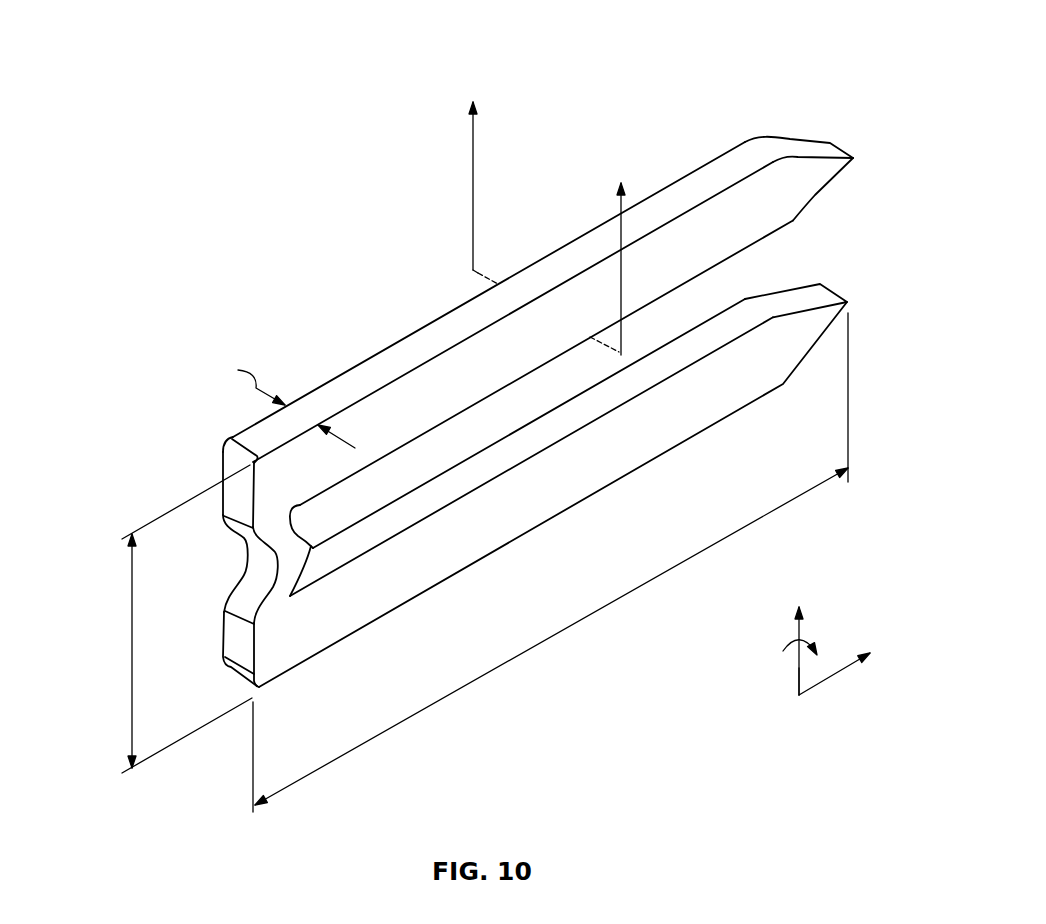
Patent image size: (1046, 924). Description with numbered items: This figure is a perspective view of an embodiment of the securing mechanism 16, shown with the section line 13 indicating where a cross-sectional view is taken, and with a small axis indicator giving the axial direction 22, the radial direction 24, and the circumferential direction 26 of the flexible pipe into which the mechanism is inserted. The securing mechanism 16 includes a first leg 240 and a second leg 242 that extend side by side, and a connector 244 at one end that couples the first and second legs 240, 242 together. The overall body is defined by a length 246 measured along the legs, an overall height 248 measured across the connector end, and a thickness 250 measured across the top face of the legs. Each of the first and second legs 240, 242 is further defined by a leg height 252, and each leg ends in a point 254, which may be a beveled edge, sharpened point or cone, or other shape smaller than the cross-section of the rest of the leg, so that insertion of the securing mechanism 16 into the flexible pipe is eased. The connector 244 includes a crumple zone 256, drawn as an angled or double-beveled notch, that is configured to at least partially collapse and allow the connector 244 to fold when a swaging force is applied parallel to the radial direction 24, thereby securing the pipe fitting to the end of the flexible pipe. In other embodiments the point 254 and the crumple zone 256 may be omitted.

The securing mechanism 16 is at (658, 57).
The section line 13- 13 is at (550, 214).
The axial axis or direction 22 is at (835, 675).
The radial axis or direction 24 is at (799, 668).
The circumferential axis or direction 26 is at (812, 641).
The first leg 240 is at (420, 330).
The second leg 242 is at (578, 501).
The connector 244 is at (245, 563).
The length 246 is at (523, 657).
The overall height 248 is at (130, 640).
The thickness 250 is at (272, 404).
The leg height 252 is at (808, 212).
The point 254 is at (838, 299).
The crumple zone 256 is at (313, 541).